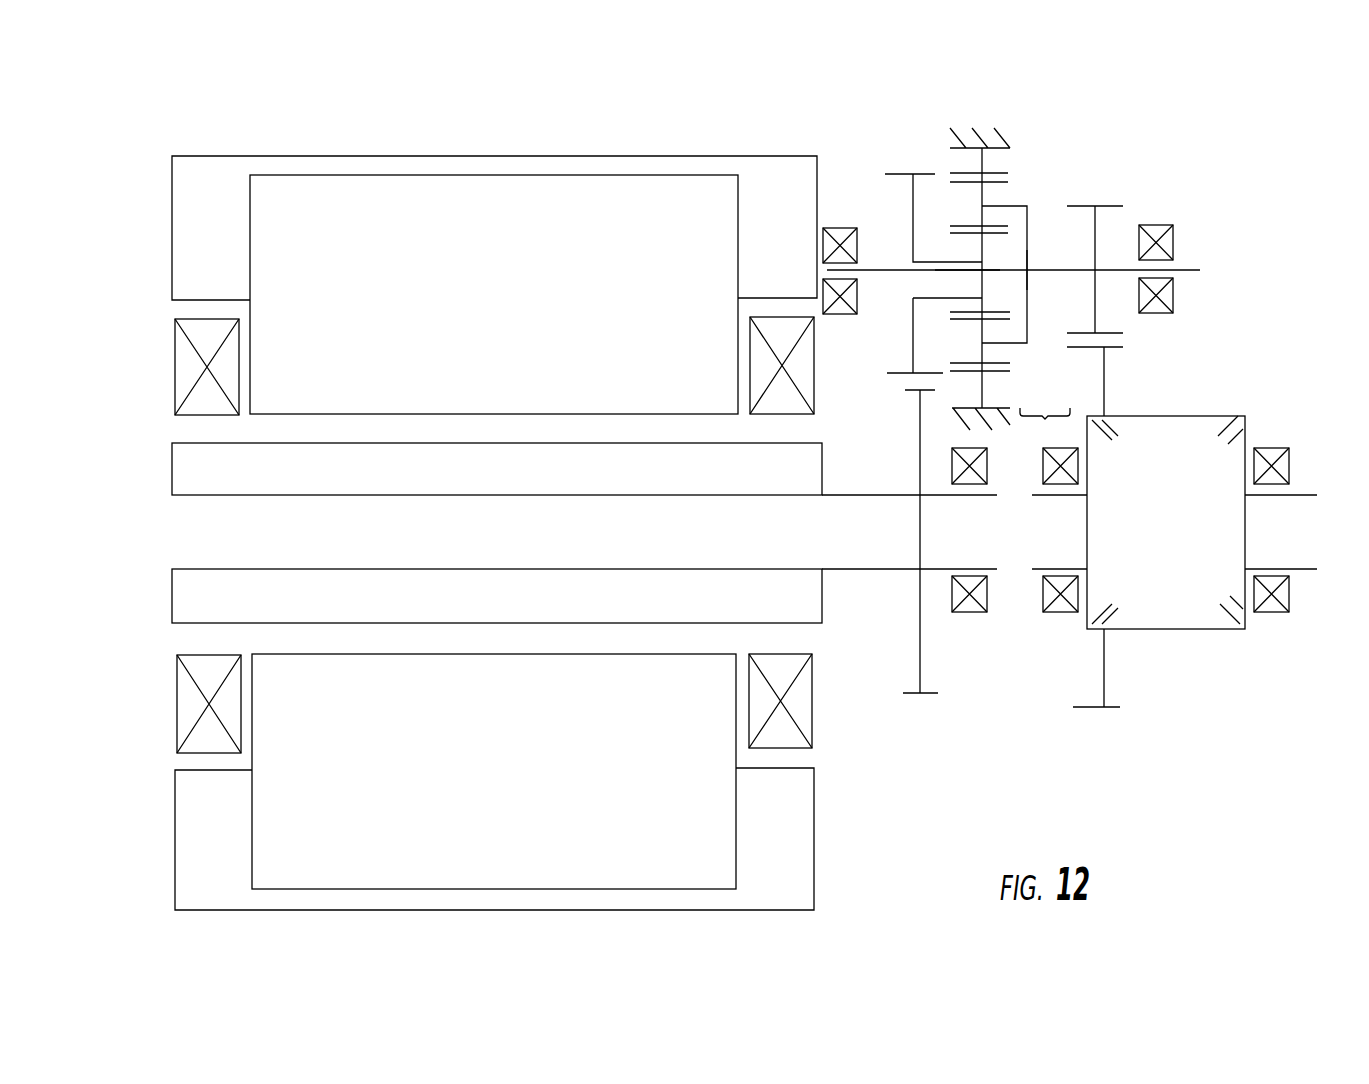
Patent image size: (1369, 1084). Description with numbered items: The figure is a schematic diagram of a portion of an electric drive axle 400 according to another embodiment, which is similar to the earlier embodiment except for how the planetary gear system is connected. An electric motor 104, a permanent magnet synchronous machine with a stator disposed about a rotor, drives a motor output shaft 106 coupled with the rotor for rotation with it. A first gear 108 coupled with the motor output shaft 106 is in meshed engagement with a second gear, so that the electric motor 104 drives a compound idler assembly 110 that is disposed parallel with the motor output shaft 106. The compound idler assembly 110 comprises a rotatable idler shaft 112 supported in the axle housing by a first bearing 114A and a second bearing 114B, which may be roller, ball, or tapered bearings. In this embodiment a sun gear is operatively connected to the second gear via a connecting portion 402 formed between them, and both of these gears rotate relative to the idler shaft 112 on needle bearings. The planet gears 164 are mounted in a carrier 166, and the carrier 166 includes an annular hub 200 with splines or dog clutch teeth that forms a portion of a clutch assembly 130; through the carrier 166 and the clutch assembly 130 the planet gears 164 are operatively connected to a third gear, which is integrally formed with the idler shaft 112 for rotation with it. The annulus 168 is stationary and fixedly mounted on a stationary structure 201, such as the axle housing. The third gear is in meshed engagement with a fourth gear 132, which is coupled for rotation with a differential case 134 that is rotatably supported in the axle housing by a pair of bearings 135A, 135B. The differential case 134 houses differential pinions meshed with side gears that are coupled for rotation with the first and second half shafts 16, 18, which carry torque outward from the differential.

The electric drive axle 400 is at (128, 173).
The electric motor 104 is at (292, 157).
The motor output shaft 106 is at (856, 492).
The first gear 108 is at (905, 390).
The compound idler assembly 110 is at (882, 205).
The idler shaft 112 is at (878, 269).
The connecting portion 402 is at (933, 272).
The first bearing 114A is at (832, 228).
The second bearing 114B is at (1168, 225).
The clutch assembly 130 is at (1011, 510).
The fourth gear 132 is at (1117, 347).
The differential case 134 is at (1208, 412).
The bearing 135A is at (1063, 613).
The bearing 135B is at (1267, 613).
The planet gears 164 is at (1008, 182).
The carrier 166 is at (1012, 204).
The annulus 168 is at (1010, 147).
The annular hub 200 is at (1030, 262).
The stationary structure 201 is at (977, 128).
The first half shaft 16 is at (1038, 569).
The second half shaft 18 is at (1310, 569).